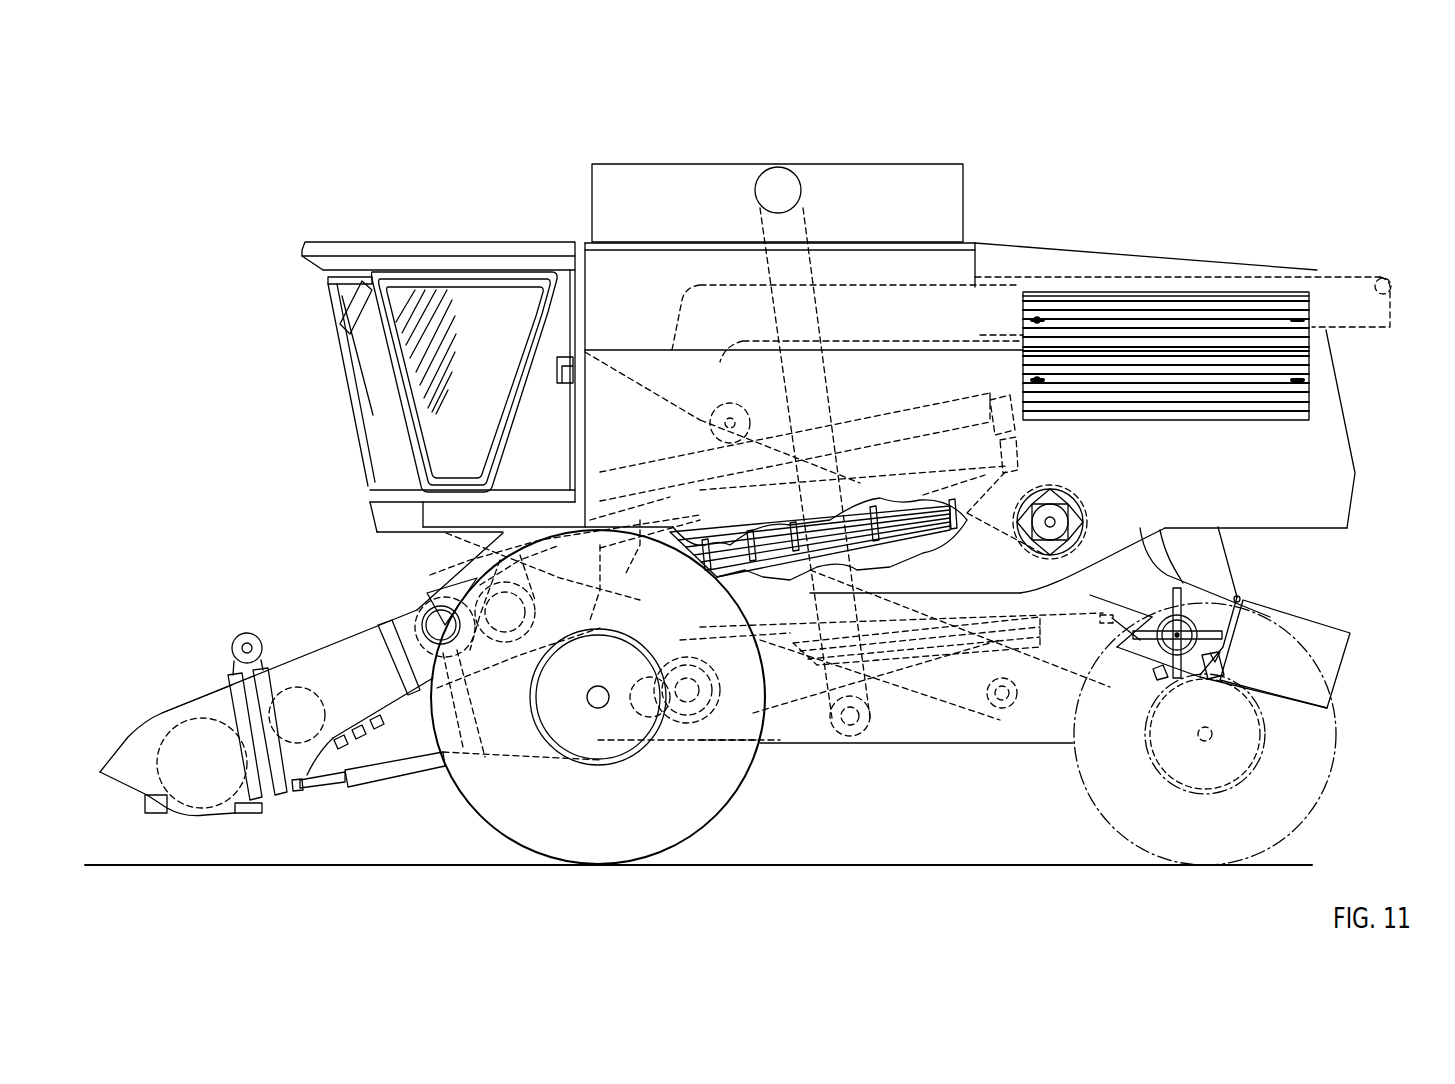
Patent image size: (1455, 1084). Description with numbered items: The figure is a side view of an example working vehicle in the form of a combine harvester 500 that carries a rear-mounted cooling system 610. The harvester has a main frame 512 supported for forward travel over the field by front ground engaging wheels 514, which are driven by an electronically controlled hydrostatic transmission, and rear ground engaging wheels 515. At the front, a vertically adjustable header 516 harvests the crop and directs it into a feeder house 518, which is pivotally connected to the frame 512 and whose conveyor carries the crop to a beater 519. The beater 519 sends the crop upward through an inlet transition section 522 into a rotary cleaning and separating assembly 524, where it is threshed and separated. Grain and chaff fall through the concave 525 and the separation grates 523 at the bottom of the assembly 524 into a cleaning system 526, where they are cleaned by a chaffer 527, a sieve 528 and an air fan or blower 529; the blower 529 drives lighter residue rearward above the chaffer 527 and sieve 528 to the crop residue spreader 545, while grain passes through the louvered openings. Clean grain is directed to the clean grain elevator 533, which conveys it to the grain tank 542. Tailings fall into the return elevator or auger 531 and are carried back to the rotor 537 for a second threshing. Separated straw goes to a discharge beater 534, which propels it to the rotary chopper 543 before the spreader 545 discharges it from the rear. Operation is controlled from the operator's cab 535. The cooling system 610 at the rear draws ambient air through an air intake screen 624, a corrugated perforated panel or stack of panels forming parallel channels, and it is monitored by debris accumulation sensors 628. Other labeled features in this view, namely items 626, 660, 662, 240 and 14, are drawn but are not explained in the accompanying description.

The combine harvester 500 is at (1298, 138).
The main frame 512 is at (1353, 462).
The front ground engaging wheels 514 is at (433, 588).
The rear ground engaging wheels 515 is at (1322, 782).
The header 516 is at (160, 692).
The feeder house 518 is at (353, 646).
The beater 519 is at (479, 571).
The inlet transition section 522 is at (446, 533).
The separation grates 523 is at (890, 546).
The rotary cleaning and separating assembly 524 is at (672, 483).
The concave 525 is at (705, 590).
The cleaning system 526 is at (941, 613).
The chaffer 527 is at (999, 616).
The sieve 528 is at (1026, 662).
The air fan or blower 529 is at (676, 732).
The return elevator or auger 531 is at (1003, 720).
The clean grain elevator 533 is at (825, 337).
The discharge beater 534 is at (1086, 498).
The operator's cab 535 is at (441, 242).
The rotor 537 is at (641, 557).
The grain tank 542 is at (977, 268).
The rotary chopper 543 is at (1183, 580).
The crop residue spreader 545 is at (1308, 618).
The flow path 240 is at (862, 412).
The cooling system 610 is at (1313, 286).
The air intake screen 624 is at (1296, 352).
The grate 626 is at (1178, 332).
The debris accumulation sensors 628 is at (1043, 302).
The sensor 660 is at (1035, 322).
The fastener 662 is at (1310, 322).
The residue chopper 14 is at (1148, 615).